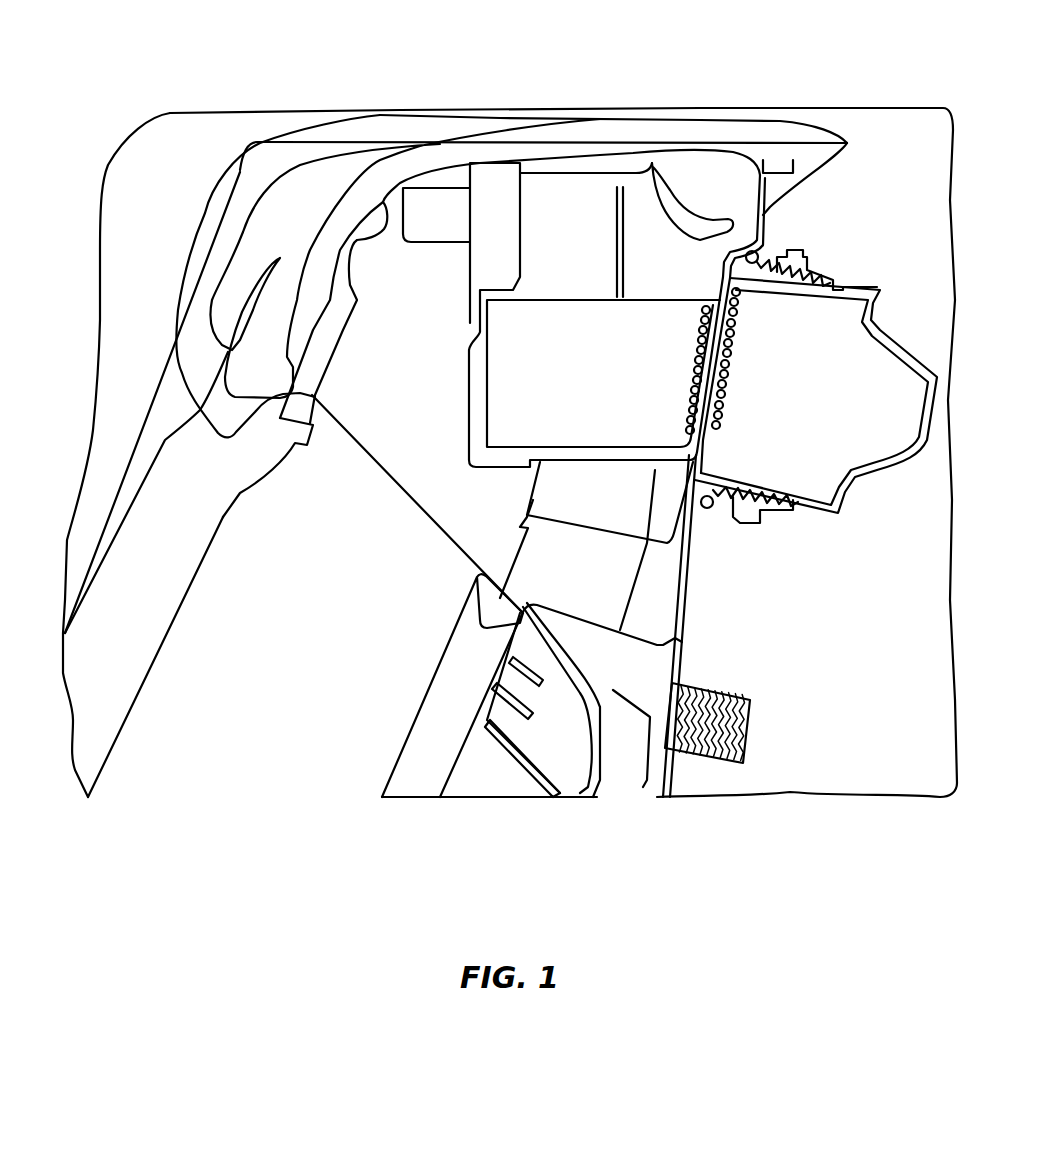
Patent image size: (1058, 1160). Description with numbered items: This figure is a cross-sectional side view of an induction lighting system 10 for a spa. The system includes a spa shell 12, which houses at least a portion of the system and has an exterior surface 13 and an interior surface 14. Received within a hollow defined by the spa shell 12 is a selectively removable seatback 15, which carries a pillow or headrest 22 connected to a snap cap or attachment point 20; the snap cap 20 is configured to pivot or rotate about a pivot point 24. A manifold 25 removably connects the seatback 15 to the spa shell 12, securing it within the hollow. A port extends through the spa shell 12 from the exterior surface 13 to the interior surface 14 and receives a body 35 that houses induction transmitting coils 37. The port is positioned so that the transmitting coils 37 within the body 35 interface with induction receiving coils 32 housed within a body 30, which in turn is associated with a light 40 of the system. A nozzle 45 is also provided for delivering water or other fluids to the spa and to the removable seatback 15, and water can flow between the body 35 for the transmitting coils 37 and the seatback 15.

The induction lighting system 10 is at (193, 97).
The spa shell 12 is at (692, 634).
The exterior surface 13 is at (690, 577).
The interior surface 14 is at (185, 420).
The selectively removable seatback 15 is at (153, 547).
The snap cap 20 is at (605, 167).
The pillow 22 is at (363, 140).
The pivot point 24 is at (698, 213).
The manifold 25 is at (503, 548).
The body for housing induction receiving coils 30 is at (596, 315).
The induction receiving coils 32 is at (693, 358).
The body for housing induction transmitting coils 35 is at (817, 497).
The induction transmitting coils 37 is at (697, 362).
The light 40 is at (467, 353).
The nozzle 45 is at (585, 657).